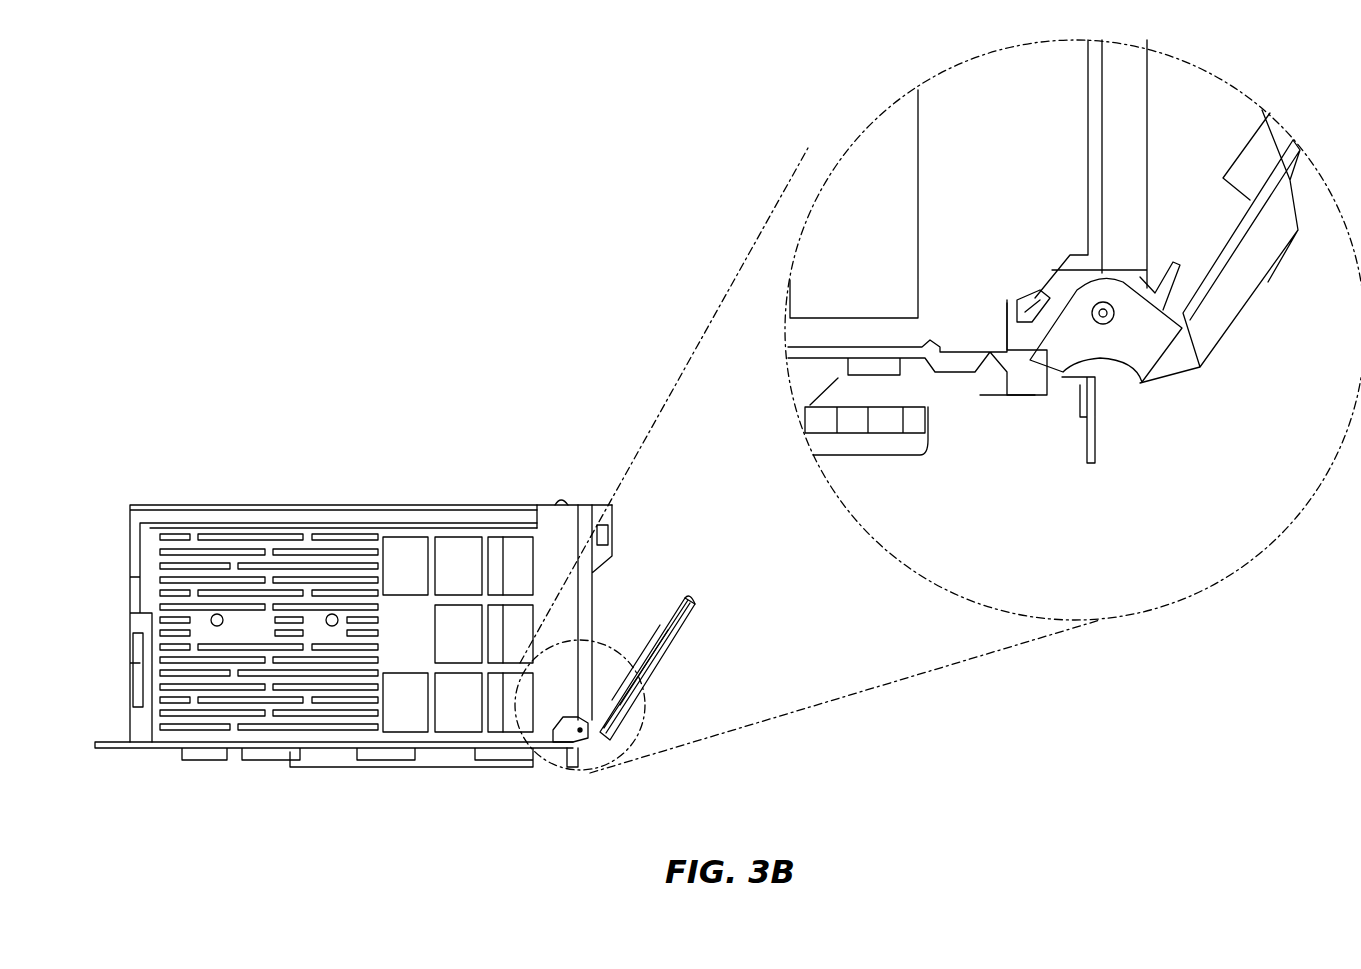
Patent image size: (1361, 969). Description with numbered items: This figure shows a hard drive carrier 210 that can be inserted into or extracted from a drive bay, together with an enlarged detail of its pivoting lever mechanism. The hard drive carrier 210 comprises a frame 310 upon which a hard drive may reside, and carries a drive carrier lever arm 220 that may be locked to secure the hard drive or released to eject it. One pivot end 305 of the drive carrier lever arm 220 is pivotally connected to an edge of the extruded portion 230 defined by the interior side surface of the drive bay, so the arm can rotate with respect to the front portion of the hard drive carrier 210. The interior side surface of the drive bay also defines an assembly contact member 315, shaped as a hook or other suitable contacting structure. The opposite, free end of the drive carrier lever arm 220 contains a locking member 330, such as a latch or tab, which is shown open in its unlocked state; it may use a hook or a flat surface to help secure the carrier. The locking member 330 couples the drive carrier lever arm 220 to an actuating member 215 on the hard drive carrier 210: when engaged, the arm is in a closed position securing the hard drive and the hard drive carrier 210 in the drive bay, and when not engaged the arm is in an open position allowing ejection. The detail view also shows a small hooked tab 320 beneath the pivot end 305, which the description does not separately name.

The hard drive carrier 210 is at (315, 468).
The actuating member 215 is at (610, 545).
The drive carrier lever arm 220 is at (672, 640).
The extruded portion 230 is at (1035, 395).
The pivot end 305 is at (578, 770).
The frame 310 is at (378, 745).
The assembly contact member 315 is at (1035, 295).
The hook 320 is at (1095, 460).
The locking member 330 is at (695, 600).